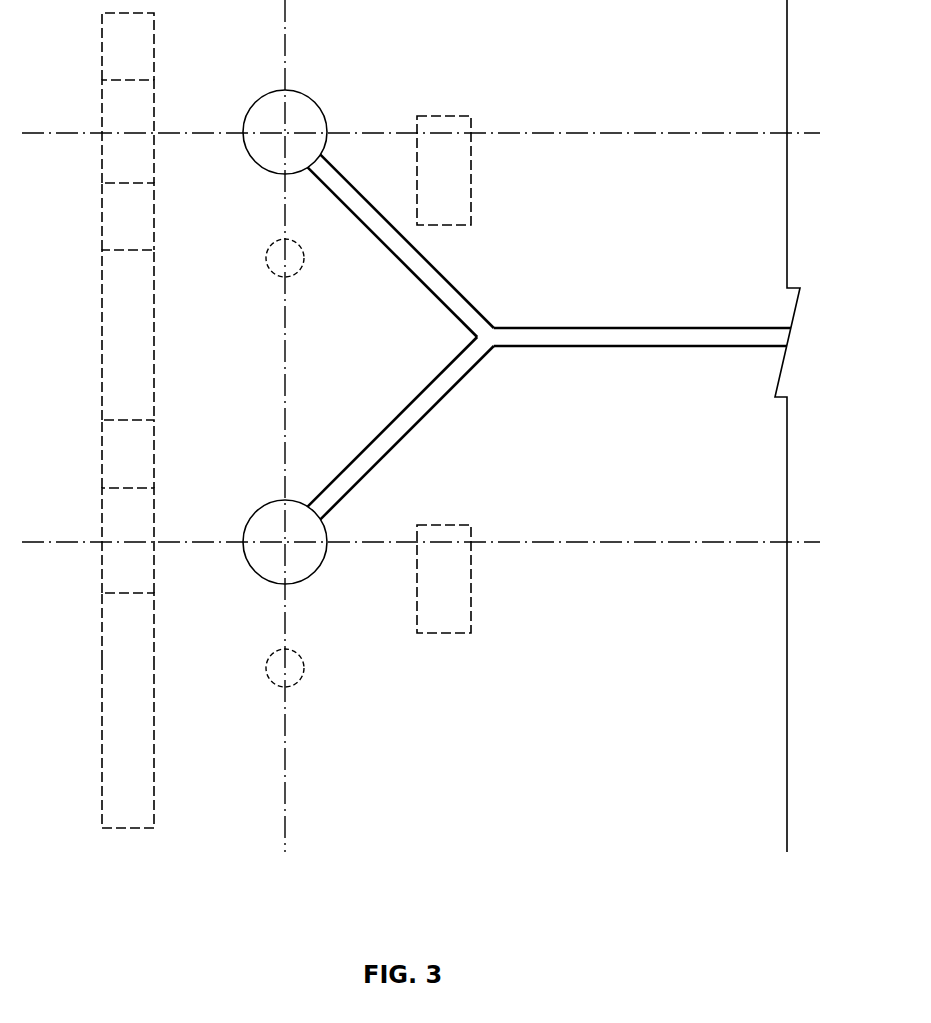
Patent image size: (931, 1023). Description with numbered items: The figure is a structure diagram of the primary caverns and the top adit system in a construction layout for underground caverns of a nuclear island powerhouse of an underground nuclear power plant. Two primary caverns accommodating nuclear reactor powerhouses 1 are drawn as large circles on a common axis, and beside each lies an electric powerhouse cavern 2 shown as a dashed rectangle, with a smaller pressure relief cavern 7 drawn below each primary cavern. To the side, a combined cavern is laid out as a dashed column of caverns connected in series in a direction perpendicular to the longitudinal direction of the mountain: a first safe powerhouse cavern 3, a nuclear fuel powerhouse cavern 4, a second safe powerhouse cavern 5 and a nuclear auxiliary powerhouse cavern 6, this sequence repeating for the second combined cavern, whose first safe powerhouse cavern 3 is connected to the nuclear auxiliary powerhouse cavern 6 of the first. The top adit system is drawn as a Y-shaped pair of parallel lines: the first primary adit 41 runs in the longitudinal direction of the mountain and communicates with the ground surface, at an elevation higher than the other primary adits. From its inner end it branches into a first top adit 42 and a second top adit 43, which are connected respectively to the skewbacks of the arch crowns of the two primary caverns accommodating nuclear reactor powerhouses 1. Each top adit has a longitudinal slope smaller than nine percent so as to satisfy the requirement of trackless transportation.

The primary cavern accommodating nuclear reactor powerhouse 1 is at (295, 326).
The electric powerhouse cavern 2 is at (460, 374).
The first safe powerhouse cavern 3 is at (144, 250).
The nuclear fuel powerhouse cavern 4 is at (144, 336).
The second safe powerhouse cavern 5 is at (144, 425).
The nuclear auxiliary powerhouse cavern 6 is at (144, 539).
The pressure relief cavern 7 is at (268, 471).
The first primary adit 41 is at (642, 315).
The first top adit 42 is at (409, 246).
The second top adit 43 is at (411, 428).